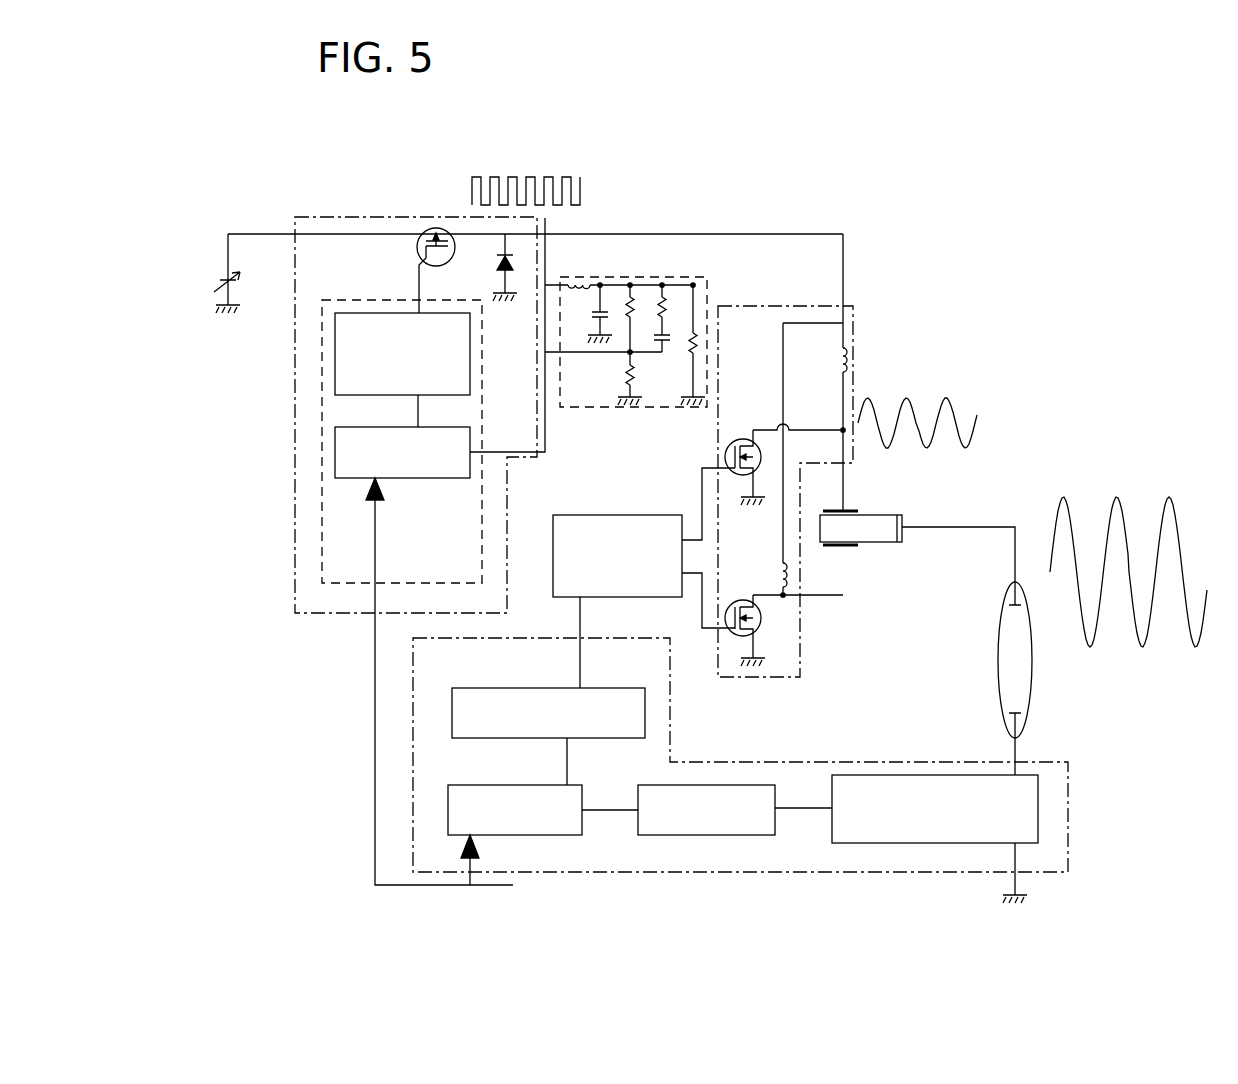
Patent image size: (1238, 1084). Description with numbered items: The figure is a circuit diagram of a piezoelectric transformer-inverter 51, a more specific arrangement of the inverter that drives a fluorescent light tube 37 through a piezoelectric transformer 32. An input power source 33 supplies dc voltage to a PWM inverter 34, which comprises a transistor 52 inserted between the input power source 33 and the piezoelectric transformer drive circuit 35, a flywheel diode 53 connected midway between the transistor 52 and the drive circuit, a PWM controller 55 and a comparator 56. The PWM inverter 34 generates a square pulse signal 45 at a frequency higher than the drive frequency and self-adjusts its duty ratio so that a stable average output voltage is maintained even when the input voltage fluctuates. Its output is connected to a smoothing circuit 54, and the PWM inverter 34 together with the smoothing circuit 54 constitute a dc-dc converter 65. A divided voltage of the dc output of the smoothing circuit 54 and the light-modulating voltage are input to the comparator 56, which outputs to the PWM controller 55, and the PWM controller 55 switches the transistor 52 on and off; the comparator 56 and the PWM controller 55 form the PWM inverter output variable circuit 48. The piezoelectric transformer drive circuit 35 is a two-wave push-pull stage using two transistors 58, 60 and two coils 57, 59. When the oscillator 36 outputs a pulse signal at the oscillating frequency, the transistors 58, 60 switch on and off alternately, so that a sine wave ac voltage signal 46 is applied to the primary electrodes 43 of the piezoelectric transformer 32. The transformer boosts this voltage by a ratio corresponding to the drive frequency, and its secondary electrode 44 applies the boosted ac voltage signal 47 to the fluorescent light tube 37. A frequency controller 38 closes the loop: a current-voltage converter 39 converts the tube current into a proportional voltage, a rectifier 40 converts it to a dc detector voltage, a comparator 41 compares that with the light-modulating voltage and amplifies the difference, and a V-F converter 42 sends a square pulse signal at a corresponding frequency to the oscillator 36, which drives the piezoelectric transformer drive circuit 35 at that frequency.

The piezoelectric transformer 32 is at (861, 520).
The input power source 33 is at (213, 292).
The PWM inverter 34 is at (548, 230).
The piezoelectric transformer drive circuit 35 is at (802, 474).
The oscillator 36 is at (633, 520).
The fluorescent light tube 37 is at (1020, 677).
The frequency controller 38 is at (763, 770).
The current-voltage converter 39 is at (952, 780).
The rectifier 40 is at (700, 790).
The comparator 41 is at (462, 792).
The V-F converter 42 is at (529, 697).
The primary electrodes 43 is at (858, 543).
The secondary electrode 44 is at (905, 520).
The square pulse signal 45 is at (556, 175).
The ac voltage signal 46 is at (964, 405).
The boosted ac voltage signal 47 is at (1144, 500).
The PWM inverter output variable circuit 48 is at (335, 553).
The piezoelectric transformer-inverter 51 is at (1073, 170).
The transistor 52 is at (435, 228).
The flywheel diode 53 is at (498, 258).
The smoothing circuit 54 is at (641, 281).
The PWM controller 55 is at (460, 338).
The comparator 56 is at (445, 470).
The coil 57 is at (775, 566).
The transistor 58 is at (725, 637).
The coil 59 is at (855, 358).
The transistor 60 is at (748, 436).
The dc-dc converter 65 is at (622, 200).